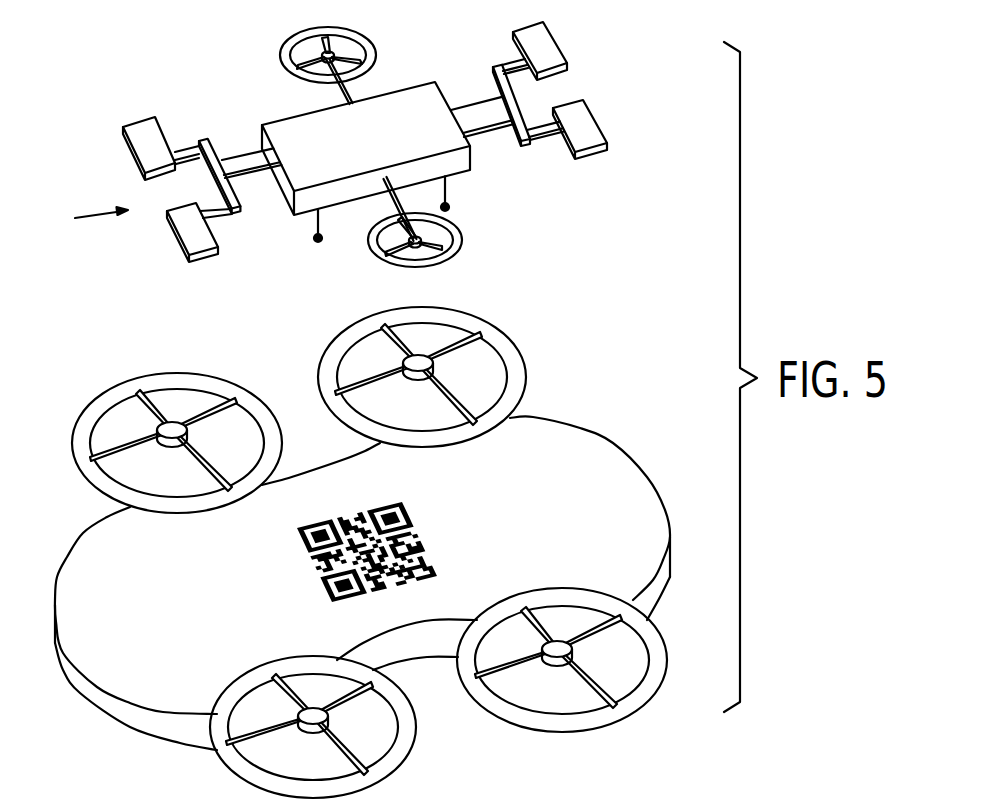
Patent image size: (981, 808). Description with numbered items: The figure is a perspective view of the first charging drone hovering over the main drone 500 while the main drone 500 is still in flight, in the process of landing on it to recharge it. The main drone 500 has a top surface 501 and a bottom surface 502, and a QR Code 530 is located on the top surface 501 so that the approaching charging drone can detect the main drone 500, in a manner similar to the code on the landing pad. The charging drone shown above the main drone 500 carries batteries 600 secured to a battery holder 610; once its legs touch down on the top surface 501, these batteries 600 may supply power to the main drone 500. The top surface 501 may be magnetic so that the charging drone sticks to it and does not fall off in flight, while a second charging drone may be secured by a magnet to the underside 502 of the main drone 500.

The main drone 500 is at (77, 578).
The top surface 501 is at (600, 451).
The bottom surface 502 is at (177, 747).
The QR Code 530 is at (317, 567).
The batteries 600 is at (138, 132).
The battery holder 610 is at (187, 140).